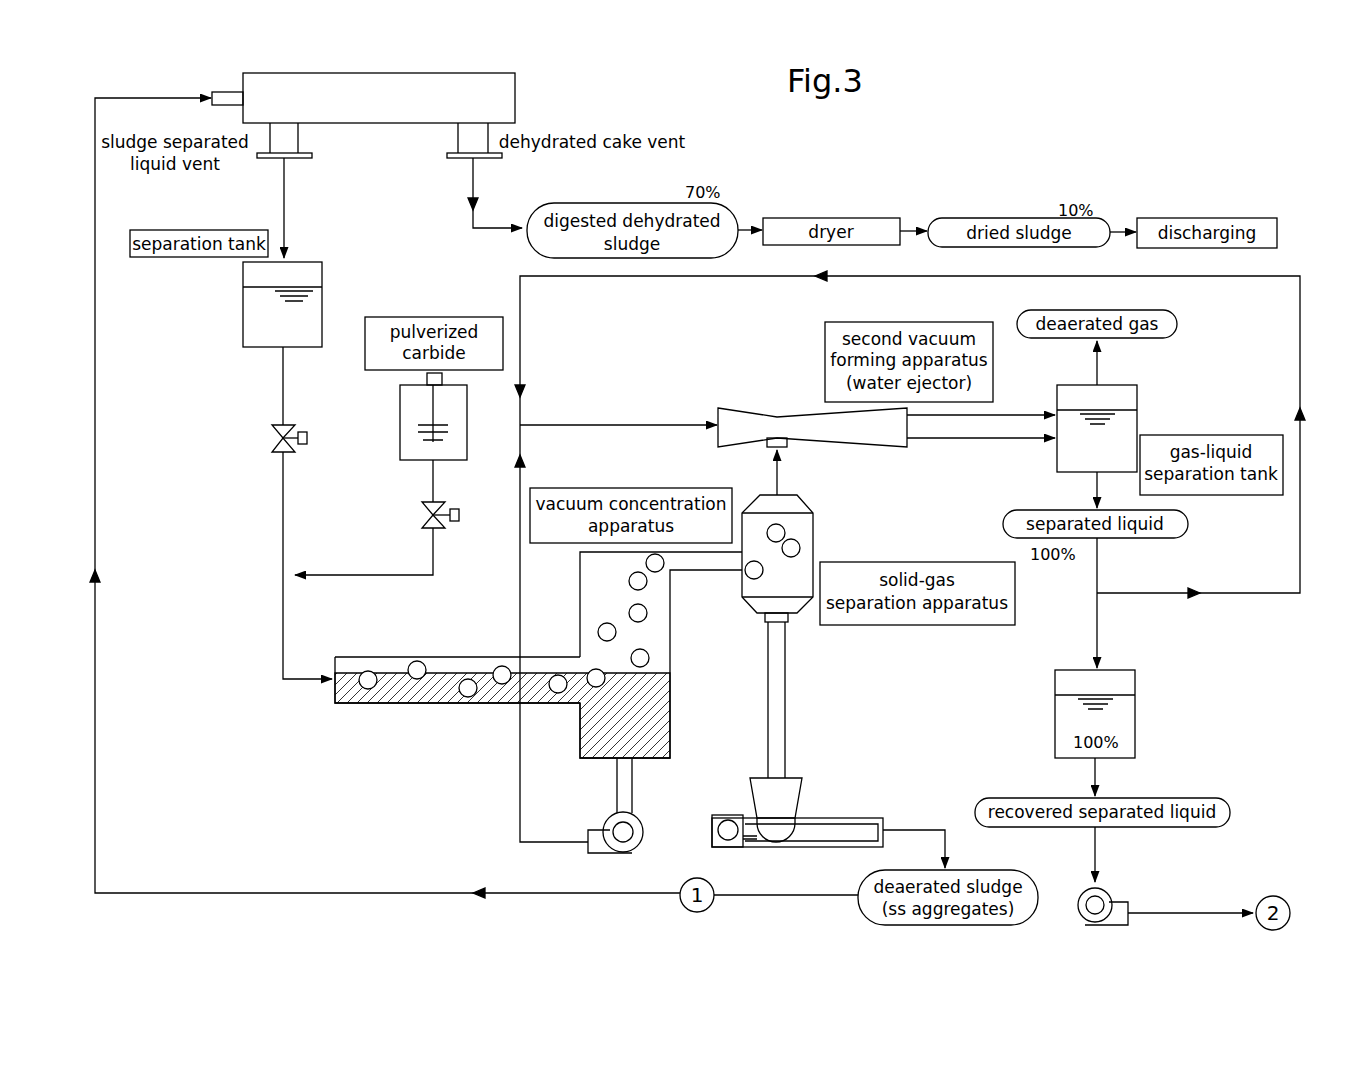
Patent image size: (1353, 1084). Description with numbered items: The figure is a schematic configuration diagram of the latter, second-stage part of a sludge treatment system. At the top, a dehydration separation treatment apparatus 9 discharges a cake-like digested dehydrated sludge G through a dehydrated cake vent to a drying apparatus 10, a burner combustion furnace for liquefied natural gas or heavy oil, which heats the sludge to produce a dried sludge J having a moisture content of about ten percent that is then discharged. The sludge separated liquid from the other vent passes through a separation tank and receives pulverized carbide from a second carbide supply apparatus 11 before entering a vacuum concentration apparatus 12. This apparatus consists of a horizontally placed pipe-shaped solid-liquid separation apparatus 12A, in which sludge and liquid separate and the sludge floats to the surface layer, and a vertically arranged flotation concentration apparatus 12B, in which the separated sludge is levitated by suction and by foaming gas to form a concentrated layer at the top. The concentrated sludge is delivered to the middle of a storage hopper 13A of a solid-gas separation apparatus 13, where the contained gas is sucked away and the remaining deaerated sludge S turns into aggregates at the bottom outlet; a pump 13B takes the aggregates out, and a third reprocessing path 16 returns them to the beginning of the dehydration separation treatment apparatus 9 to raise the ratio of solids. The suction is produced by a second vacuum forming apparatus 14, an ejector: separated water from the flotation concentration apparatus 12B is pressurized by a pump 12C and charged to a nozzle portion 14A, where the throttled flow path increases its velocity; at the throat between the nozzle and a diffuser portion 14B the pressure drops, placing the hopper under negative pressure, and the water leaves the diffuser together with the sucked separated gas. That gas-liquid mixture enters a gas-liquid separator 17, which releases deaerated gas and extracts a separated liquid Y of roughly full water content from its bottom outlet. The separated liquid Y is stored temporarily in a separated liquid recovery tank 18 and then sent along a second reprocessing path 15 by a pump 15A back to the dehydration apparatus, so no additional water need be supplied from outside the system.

The dehydration separation treatment apparatus 9 is at (373, 123).
The drying apparatus 10 is at (825, 218).
The second carbide supply apparatus 11 is at (400, 408).
The vacuum concentration apparatus 12 is at (553, 702).
The solid-liquid separation apparatus 12A is at (543, 703).
The flotation concentration apparatus 12B is at (671, 660).
The pump 12C is at (658, 795).
The solid-gas separation apparatus 13 is at (820, 671).
The storage hopper 13A is at (813, 528).
The pump 13B is at (810, 812).
The second vacuum forming apparatus 14 is at (758, 390).
The nozzle portion 14A is at (746, 410).
The diffuser portion 14B is at (827, 407).
The second reprocessing path 15 is at (1165, 886).
The pump 15A is at (1113, 887).
The third reprocessing path 16 is at (210, 893).
The gas-liquid separator 17 is at (1137, 400).
The separated liquid recovery tank 18 is at (1135, 715).
The digested dehydrated sludge G is at (600, 203).
The dried sludge J is at (1005, 218).
The separated liquid Y is at (1188, 525).
The deaerated sludge S is at (985, 870).